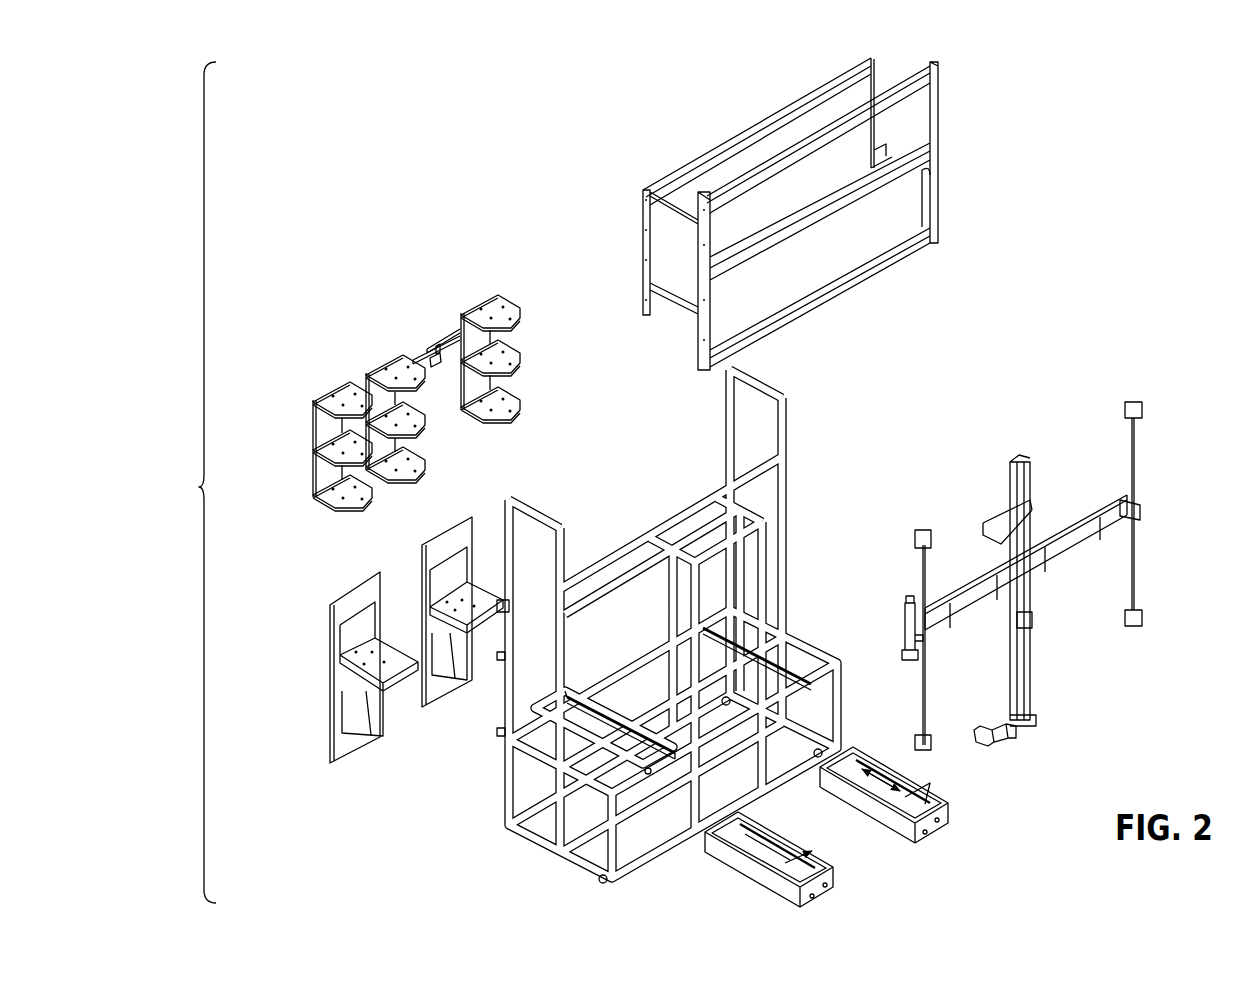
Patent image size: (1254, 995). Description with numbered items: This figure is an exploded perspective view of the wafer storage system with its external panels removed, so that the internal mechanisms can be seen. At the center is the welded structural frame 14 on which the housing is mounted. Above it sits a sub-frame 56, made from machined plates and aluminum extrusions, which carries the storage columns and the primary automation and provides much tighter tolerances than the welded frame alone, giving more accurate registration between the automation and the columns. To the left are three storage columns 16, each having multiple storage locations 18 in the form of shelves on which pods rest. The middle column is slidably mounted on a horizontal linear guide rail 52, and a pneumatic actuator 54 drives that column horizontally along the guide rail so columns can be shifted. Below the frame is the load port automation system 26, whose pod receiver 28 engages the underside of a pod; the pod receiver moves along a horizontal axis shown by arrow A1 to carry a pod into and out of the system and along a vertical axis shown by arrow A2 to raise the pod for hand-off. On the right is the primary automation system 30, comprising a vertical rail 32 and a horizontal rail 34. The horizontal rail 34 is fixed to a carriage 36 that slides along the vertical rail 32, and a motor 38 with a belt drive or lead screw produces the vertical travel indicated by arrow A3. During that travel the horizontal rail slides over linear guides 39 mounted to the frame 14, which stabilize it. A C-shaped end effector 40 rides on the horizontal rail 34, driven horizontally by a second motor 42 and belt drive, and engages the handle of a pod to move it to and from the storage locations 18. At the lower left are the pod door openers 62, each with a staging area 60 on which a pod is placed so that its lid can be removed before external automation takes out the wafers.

The structural frame 14 is at (764, 381).
The storage column 16 is at (326, 384).
The storage location 18 is at (315, 472).
The load port automation system 26 is at (769, 847).
The pod receiver 28 is at (790, 862).
The primary automation system 30 is at (1017, 536).
The vertical rail 32 is at (1040, 480).
The horizontal rail 34 is at (1070, 557).
The carriage 36 is at (1005, 595).
The motor 38 is at (1000, 740).
The linear guide 39 is at (920, 558).
The end effector 40 is at (983, 524).
The second motor 42 is at (904, 612).
The horizontal linear guide rail 52 is at (440, 373).
The pneumatic actuator 54 is at (427, 347).
The sub-frame 56 is at (942, 118).
The staging area 60 is at (393, 665).
The pod door opener 62 is at (330, 618).
The horizontal axis arrow A1 is at (878, 780).
The vertical axis arrow A2 is at (918, 800).
The vertical travel arrow A3 is at (949, 592).